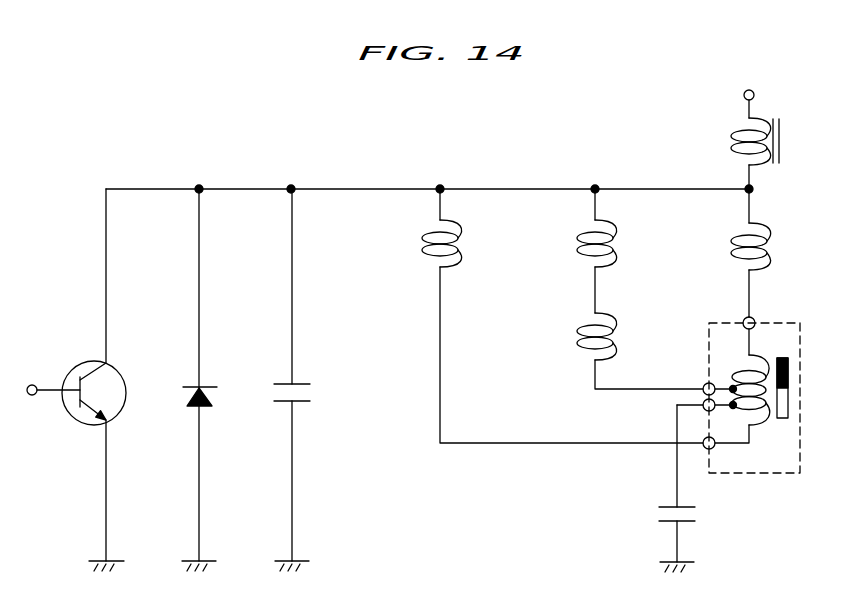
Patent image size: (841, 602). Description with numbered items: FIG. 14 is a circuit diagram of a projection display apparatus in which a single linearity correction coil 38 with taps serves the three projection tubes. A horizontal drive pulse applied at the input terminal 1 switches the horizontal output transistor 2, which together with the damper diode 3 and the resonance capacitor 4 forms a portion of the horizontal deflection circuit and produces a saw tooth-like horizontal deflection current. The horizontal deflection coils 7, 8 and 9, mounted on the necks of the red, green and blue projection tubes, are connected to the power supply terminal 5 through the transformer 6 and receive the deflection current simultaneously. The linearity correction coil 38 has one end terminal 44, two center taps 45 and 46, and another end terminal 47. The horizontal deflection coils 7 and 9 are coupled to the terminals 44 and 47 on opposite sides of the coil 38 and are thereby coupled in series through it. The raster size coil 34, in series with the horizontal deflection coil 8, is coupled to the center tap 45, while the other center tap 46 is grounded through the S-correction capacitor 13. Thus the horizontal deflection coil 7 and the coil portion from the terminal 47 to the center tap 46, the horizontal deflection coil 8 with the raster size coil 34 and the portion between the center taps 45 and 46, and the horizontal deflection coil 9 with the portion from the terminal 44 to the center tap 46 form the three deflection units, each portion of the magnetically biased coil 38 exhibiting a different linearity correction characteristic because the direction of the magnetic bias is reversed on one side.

The horizontal drive pulse input terminal 1 is at (34, 384).
The horizontal output transistor 2 is at (118, 372).
The damper diode 3 is at (206, 382).
The resonance capacitor 4 is at (300, 382).
The power supply terminal 5 is at (745, 98).
The transformer 6 is at (783, 150).
The horizontal deflection coil 7 is at (419, 248).
The horizontal deflection coil 8 is at (574, 248).
The horizontal deflection coil 9 is at (728, 248).
The S-correction capacitor 13 is at (661, 503).
The raster size coil 34 is at (574, 328).
The linearity correction coil with taps 38 is at (774, 474).
The end terminal 44 is at (756, 320).
The center tap 45 is at (705, 383).
The center tap 46 is at (703, 404).
The end terminal 47 is at (708, 452).